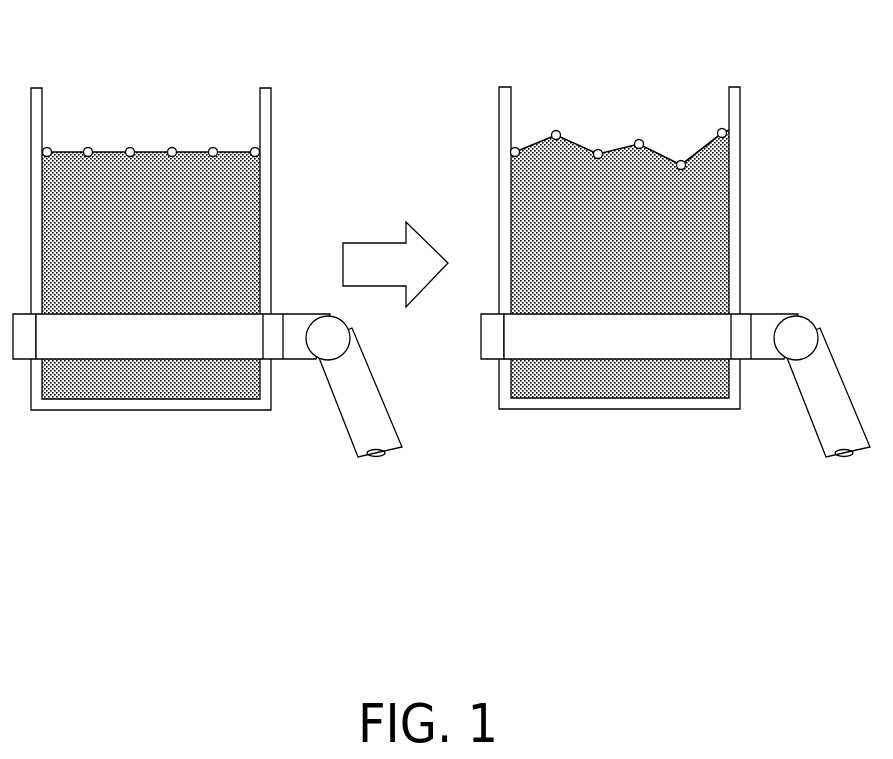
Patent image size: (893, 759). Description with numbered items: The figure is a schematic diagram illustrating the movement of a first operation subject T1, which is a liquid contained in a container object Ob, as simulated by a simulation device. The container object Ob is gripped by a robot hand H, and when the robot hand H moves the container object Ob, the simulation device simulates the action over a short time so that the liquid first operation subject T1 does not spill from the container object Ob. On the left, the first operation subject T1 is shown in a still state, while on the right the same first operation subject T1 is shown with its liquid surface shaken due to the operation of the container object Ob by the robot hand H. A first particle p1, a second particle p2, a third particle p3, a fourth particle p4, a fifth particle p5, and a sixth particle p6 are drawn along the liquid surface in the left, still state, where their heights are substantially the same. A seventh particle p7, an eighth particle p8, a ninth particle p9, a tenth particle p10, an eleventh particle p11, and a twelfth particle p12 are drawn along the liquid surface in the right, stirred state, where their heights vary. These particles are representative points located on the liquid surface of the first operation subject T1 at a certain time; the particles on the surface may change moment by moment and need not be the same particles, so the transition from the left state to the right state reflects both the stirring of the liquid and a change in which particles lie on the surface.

The first particle p1 is at (48, 147).
The second particle p2 is at (89, 147).
The third particle p3 is at (131, 147).
The fourth particle p4 is at (173, 147).
The fifth particle p5 is at (214, 147).
The sixth particle p6 is at (258, 148).
The seventh particle p7 is at (517, 147).
The eighth particle p8 is at (558, 130).
The ninth particle p9 is at (600, 149).
The tenth particle p10 is at (641, 139).
The eleventh particle p11 is at (682, 160).
The twelfth particle p12 is at (726, 130).
The container object Ob is at (265, 87).
The first operation subject T1 is at (220, 376).
The robot hand H is at (358, 432).